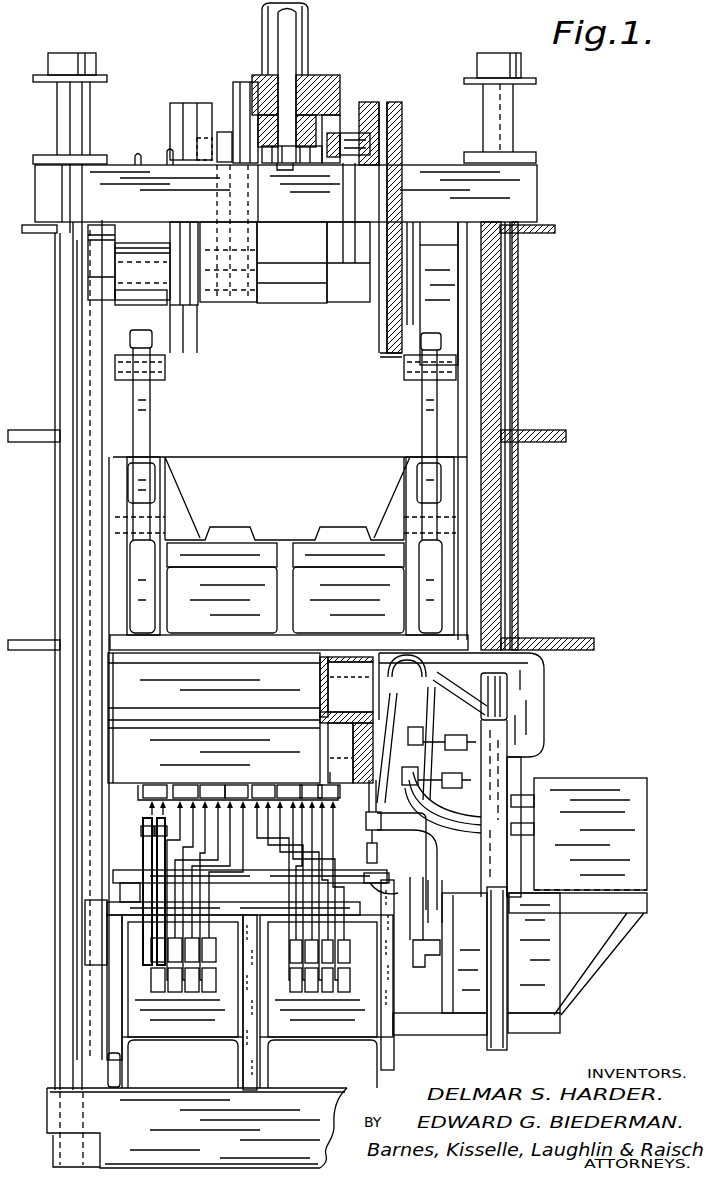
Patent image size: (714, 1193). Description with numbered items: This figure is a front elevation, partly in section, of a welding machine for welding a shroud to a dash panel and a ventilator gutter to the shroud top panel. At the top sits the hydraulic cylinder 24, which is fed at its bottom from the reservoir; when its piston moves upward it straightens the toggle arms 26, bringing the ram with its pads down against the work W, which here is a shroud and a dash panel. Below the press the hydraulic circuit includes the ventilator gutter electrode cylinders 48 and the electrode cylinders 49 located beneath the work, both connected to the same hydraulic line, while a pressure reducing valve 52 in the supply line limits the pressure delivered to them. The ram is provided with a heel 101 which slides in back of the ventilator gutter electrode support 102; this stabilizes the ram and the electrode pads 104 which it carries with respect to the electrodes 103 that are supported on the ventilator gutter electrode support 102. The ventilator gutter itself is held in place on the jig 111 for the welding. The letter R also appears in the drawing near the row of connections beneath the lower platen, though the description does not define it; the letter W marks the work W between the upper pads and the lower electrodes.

The cylinder 24 is at (310, 50).
The toggle arms 26 is at (163, 370).
The ventilator gutter electrode cylinders 48 is at (322, 718).
The electrode cylinders 49 is at (148, 816).
The pressure reducing valve 52 is at (322, 705).
The heel 101 is at (531, 700).
The ventilator gutter electrode support 102 is at (502, 773).
The electrodes 103 is at (437, 720).
The electrode pads 104 is at (345, 745).
The jig 111 is at (345, 758).
The return line R is at (247, 787).
The work W is at (330, 778).